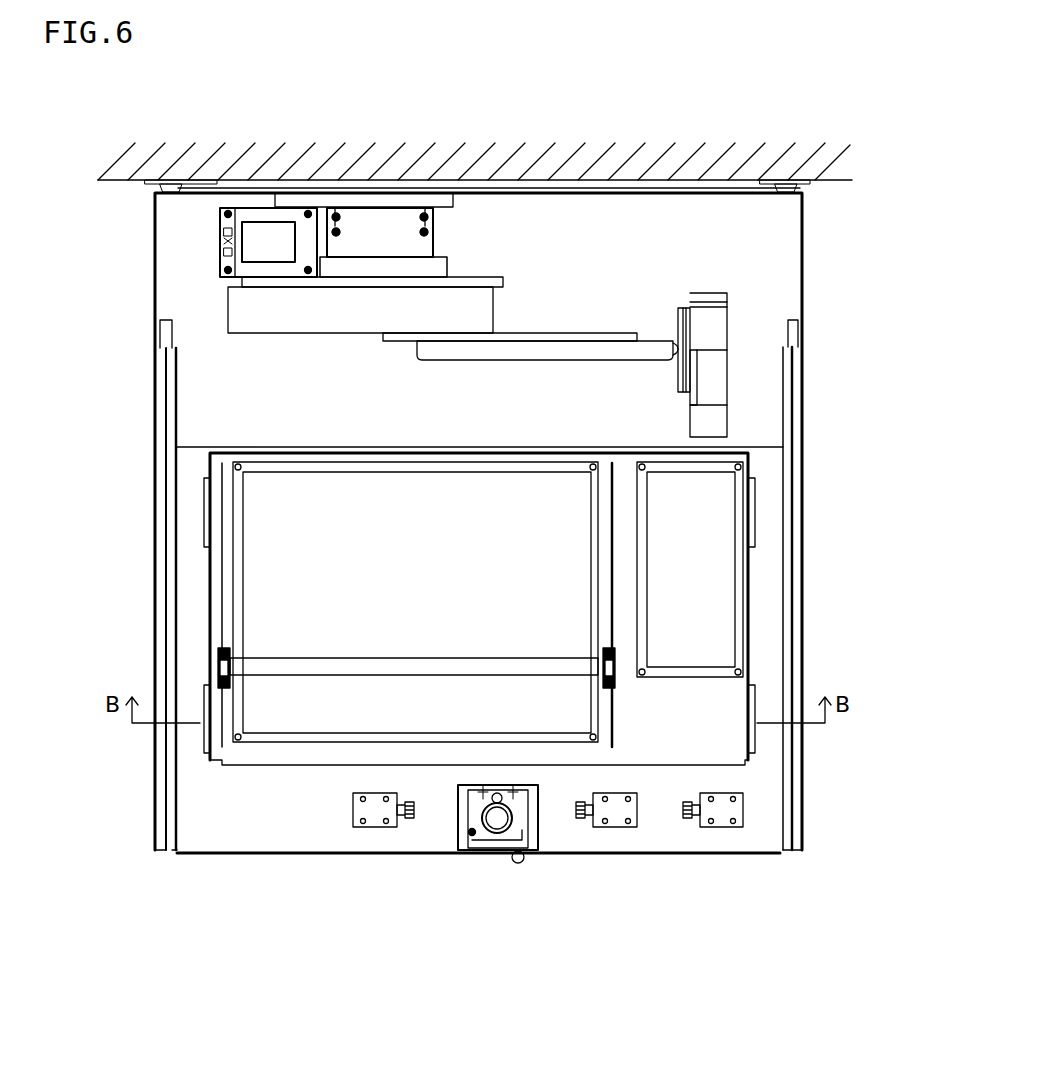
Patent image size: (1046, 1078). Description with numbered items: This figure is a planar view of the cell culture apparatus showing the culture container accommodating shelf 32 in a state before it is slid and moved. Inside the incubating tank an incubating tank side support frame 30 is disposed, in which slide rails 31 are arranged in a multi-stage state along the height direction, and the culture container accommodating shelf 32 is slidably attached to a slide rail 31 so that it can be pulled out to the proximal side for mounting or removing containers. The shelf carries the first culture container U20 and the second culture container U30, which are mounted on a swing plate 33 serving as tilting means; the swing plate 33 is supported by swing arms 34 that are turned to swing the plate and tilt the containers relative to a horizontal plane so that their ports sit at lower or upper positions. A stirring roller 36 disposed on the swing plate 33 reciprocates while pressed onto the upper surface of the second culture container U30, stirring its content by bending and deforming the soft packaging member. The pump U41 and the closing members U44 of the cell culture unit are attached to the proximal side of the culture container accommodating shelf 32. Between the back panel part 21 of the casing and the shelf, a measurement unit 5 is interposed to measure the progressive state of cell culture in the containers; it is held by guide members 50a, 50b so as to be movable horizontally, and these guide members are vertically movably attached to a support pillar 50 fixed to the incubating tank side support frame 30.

The back panel part 21 is at (505, 165).
The incubating tank side support frame 30 is at (153, 257).
The slide rail 31 is at (163, 657).
The culture container accommodating shelf 32 is at (190, 815).
The swing plate 33 is at (565, 745).
The swing arm 34 is at (205, 515).
The stirring roller 36 is at (278, 668).
The measurement unit 5 is at (717, 325).
The support pillar 50 is at (380, 232).
The guide member 50a is at (308, 310).
The guide member 50b is at (443, 347).
The first culture container U20 is at (693, 577).
The second culture container U30 is at (316, 705).
The pump U41 is at (497, 818).
The closing member U44 is at (375, 815).